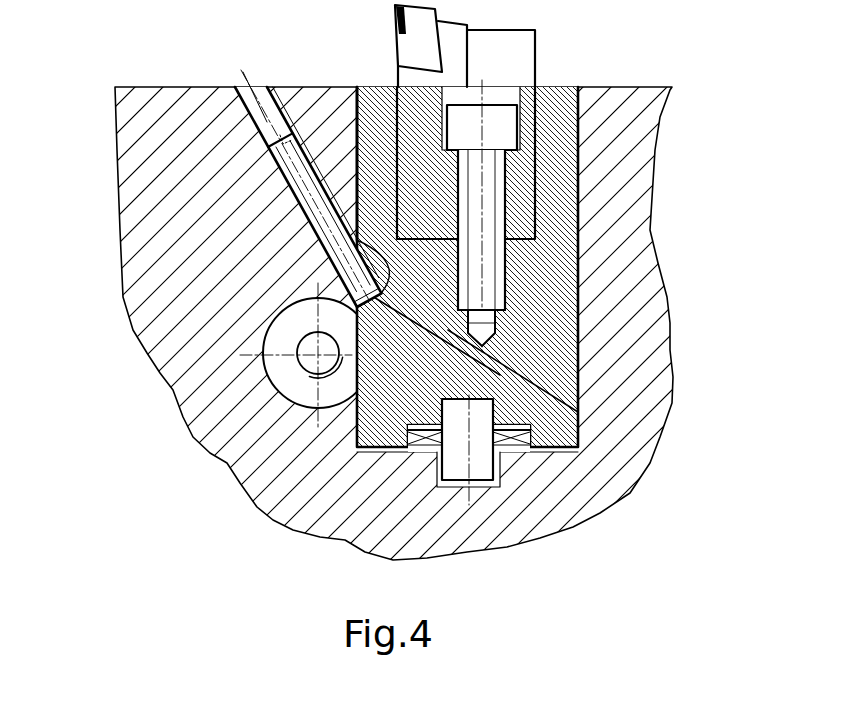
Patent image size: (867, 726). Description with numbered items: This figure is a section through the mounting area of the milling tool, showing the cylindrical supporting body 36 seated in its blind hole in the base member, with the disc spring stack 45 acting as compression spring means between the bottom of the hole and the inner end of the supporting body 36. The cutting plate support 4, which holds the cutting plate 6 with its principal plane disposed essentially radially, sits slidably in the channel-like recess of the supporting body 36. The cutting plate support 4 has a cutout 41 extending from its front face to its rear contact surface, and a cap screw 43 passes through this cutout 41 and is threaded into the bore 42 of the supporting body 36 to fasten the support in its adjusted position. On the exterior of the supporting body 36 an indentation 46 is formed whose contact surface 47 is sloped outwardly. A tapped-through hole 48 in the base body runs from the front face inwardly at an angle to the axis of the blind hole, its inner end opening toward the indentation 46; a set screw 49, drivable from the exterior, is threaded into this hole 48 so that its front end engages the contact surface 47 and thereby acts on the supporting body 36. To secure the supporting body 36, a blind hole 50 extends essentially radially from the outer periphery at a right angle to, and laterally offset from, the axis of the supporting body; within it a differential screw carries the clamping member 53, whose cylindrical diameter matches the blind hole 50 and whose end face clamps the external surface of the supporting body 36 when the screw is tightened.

The cutting plate support 4 is at (527, 173).
The cutting plate 6 is at (425, 48).
The supporting body 36 is at (549, 357).
The cutout 41 is at (507, 207).
The bore 42 is at (507, 289).
The cap screw 43 is at (497, 130).
The disc spring stack 45 is at (505, 445).
The indentation 46 is at (355, 140).
The contact surface 47 is at (582, 405).
The tapped-through hole 48 is at (257, 123).
The set screw 49 is at (320, 218).
The blind hole 50 is at (262, 348).
The clamping member 53 is at (290, 378).